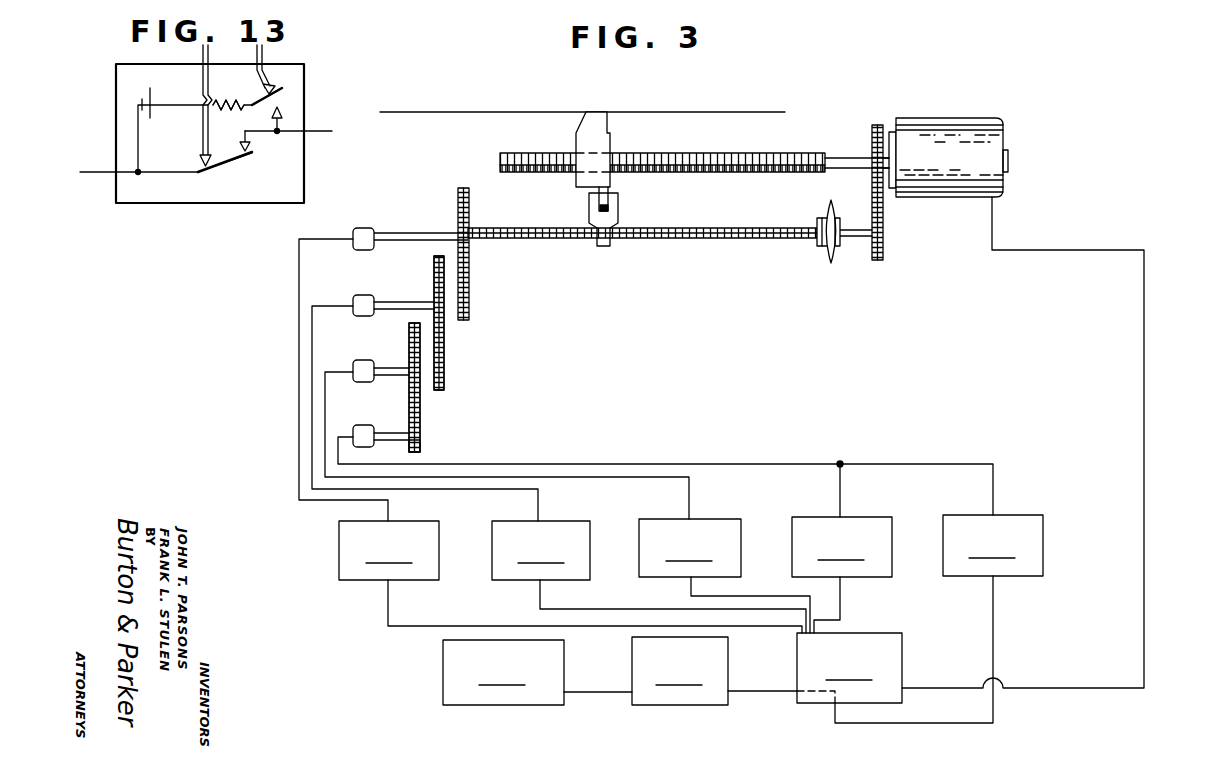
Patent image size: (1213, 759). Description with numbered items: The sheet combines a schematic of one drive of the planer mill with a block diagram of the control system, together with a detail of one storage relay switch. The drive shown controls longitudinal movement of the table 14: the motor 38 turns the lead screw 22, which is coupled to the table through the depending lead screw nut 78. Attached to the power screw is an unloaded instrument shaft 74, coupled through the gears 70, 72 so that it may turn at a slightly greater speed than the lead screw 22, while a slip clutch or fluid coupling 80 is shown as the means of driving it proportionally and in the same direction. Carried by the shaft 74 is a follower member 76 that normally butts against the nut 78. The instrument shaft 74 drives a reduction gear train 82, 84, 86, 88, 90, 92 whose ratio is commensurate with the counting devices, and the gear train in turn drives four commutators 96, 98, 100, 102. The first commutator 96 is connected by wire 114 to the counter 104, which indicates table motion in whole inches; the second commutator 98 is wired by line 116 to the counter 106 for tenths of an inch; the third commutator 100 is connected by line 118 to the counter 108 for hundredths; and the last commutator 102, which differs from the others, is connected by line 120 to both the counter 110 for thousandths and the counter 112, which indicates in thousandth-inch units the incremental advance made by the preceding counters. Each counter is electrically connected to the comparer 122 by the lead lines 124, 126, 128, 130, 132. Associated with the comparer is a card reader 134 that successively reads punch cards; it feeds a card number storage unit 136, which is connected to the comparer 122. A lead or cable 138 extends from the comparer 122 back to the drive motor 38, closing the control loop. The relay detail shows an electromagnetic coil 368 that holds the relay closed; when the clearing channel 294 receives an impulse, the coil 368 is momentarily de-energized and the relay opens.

In FIG. 3, the table 14 is at (478, 112).
In FIG. 3, the lead screw 22 is at (771, 154).
In FIG. 3, the motor 38 is at (975, 130).
In FIG. 3, the gear 70 is at (872, 178).
In FIG. 3, the gear 72 is at (881, 258).
In FIG. 3, the instrument shaft 74 is at (742, 243).
In FIG. 3, the follower member 76 is at (618, 214).
In FIG. 3, the lead screw nut 78 is at (600, 180).
In FIG. 3, the slip clutch 80 is at (832, 264).
In FIG. 3, the gear 82 is at (470, 272).
In FIG. 3, the gear 84 is at (470, 313).
In FIG. 3, the gear 86 is at (447, 336).
In FIG. 3, the gear 88 is at (445, 381).
In FIG. 3, the gear 90 is at (421, 408).
In FIG. 3, the gear 92 is at (421, 445).
In FIG. 3, the first commutator 96 is at (366, 232).
In FIG. 3, the second commutator 98 is at (366, 302).
In FIG. 3, the third commutator 100 is at (363, 368).
In FIG. 3, the last commutator 102 is at (363, 432).
In FIG. 3, the counter 104 is at (389, 550).
In FIG. 3, the counter 106 is at (541, 550).
In FIG. 3, the counter 108 is at (690, 548).
In FIG. 3, the counter 110 is at (842, 547).
In FIG. 3, the counter 112 is at (993, 545).
In FIG. 3, the wire 114 is at (299, 294).
In FIG. 3, the line 116 is at (312, 366).
In FIG. 3, the line 118 is at (325, 414).
In FIG. 3, the line 120 is at (735, 464).
In FIG. 3, the comparer 122 is at (849, 668).
In FIG. 3, the lead line 124 is at (410, 626).
In FIG. 3, the lead line 126 is at (556, 613).
In FIG. 3, the lead line 128 is at (735, 598).
In FIG. 3, the lead line 130 is at (848, 616).
In FIG. 3, the lead line 132 is at (998, 622).
In FIG. 3, the card reader 134 is at (537, 672).
In FIG. 3, the card number storage unit 136 is at (714, 671).
In FIG. 3, the lead 138 is at (1144, 542).
In FIG. 13, the clearing channel 294 is at (262, 52).
In FIG. 13, the electromagnetic coil 368 is at (250, 90).